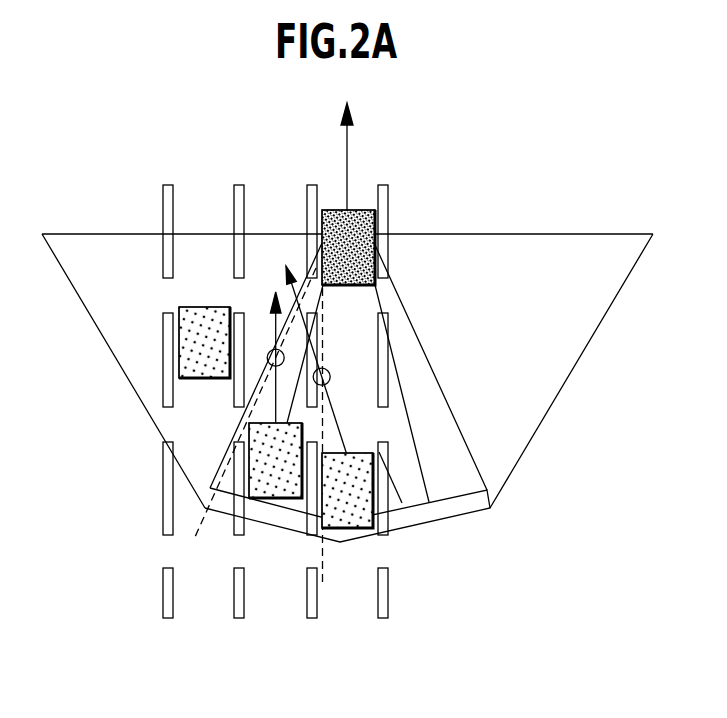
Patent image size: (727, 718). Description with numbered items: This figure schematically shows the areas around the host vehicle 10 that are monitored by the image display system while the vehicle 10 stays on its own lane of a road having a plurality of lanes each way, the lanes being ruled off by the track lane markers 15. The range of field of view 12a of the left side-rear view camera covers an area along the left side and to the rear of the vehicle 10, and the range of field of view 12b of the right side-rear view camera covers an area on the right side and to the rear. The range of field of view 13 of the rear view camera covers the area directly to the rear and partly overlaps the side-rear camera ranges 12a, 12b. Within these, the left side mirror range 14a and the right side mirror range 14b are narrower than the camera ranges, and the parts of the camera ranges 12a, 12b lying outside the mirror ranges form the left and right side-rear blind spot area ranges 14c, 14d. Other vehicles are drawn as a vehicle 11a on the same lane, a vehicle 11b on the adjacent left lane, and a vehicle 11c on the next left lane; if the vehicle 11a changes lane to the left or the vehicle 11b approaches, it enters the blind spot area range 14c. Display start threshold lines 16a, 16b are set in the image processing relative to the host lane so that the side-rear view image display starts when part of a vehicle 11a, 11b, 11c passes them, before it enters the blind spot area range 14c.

The vehicle 10 is at (358, 226).
The vehicle running on the same lane 11a is at (343, 530).
The vehicle running on a left lane adjacent 11b is at (267, 472).
The vehicle running on another left lane 11c is at (187, 368).
The range of field of view of the left side-rear view camera 12a is at (101, 234).
The range of field of view of the right side-rear view camera 12b is at (468, 234).
The range of field of view of the rear view camera 13 is at (401, 504).
The range of field of view of a left side-mirror 14a is at (265, 410).
The range of field of view of a right side-mirror 14b is at (457, 422).
The left side-rear blind spot area range 14c is at (128, 350).
The right side-rear blind spot area range 14d is at (542, 378).
The track lane markers 15 is at (171, 184).
The display start threshold line 16a is at (320, 548).
The display start threshold line 16b is at (198, 520).